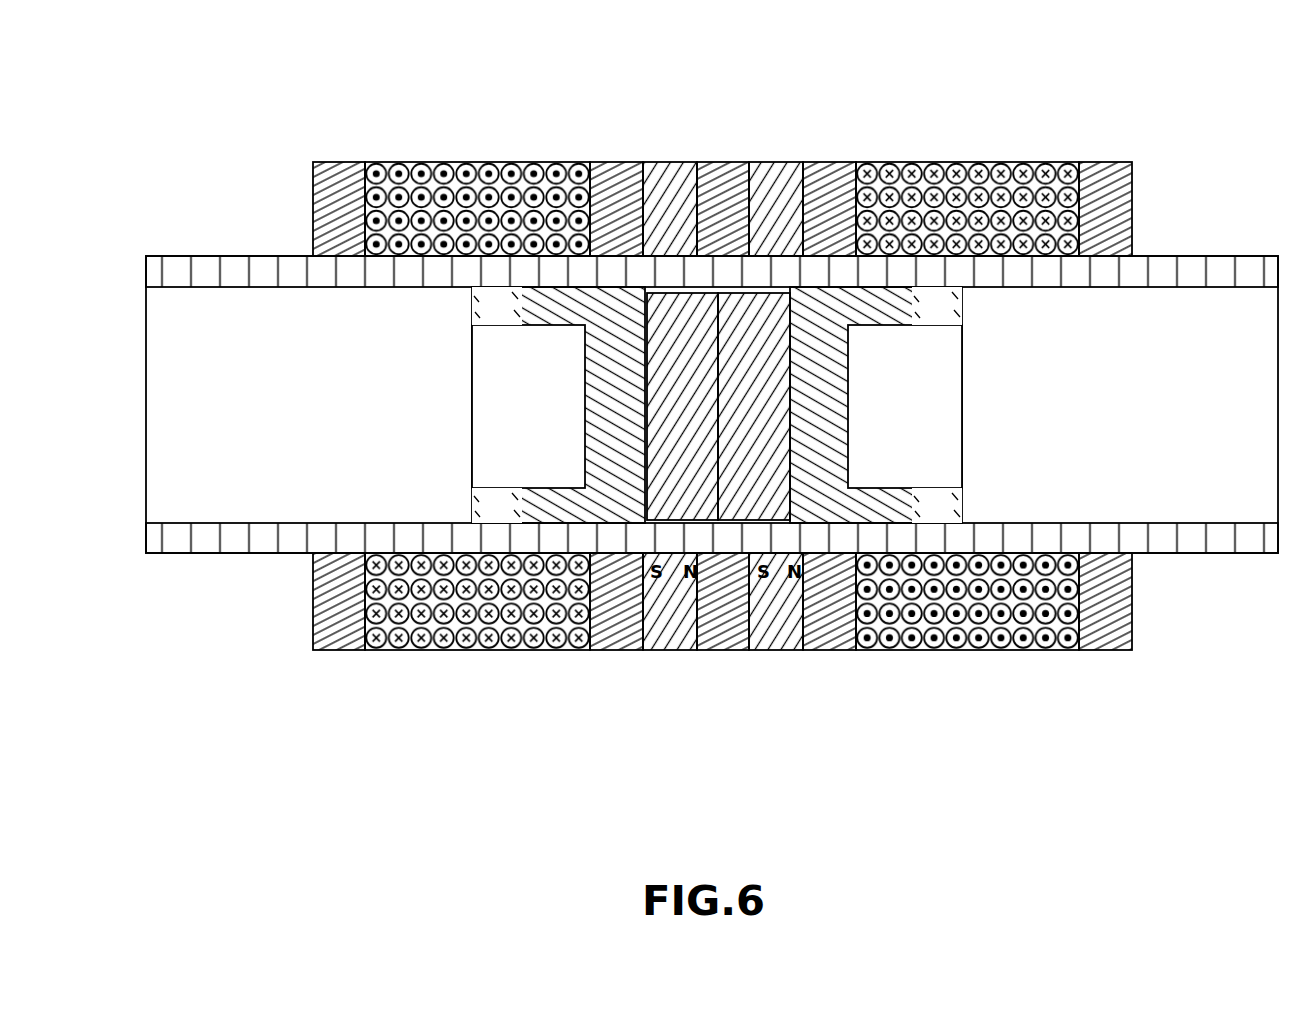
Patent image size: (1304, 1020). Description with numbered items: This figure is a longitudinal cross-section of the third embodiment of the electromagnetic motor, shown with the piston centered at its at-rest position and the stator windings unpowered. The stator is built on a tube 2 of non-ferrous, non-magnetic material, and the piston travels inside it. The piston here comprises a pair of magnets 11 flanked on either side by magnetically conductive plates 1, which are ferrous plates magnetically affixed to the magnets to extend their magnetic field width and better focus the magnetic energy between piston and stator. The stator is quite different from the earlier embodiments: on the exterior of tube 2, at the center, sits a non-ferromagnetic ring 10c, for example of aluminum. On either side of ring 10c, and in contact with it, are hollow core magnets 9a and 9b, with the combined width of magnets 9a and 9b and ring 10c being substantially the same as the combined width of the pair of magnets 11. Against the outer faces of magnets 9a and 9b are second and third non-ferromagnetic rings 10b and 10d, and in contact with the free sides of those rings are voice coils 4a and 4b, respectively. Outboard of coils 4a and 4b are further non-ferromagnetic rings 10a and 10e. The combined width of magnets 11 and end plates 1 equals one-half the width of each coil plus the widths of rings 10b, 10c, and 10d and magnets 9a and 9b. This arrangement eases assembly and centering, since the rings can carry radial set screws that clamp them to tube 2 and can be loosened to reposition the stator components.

The magnetically conductive plates 1 is at (472, 343).
The tube 2 is at (288, 258).
The voice coil 4a is at (403, 160).
The voice coil 4b is at (1050, 165).
The hollow core magnet 9a is at (673, 162).
The hollow core magnet 9b is at (787, 162).
The non-ferromagnetic ring 10a is at (340, 638).
The non-ferromagnetic ring 10b is at (623, 640).
The non-ferromagnetic ring 10c is at (723, 632).
The non-ferromagnetic ring 10d is at (843, 653).
The non-ferromagnetic ring 10e is at (1113, 643).
The magnets 11 is at (672, 381).